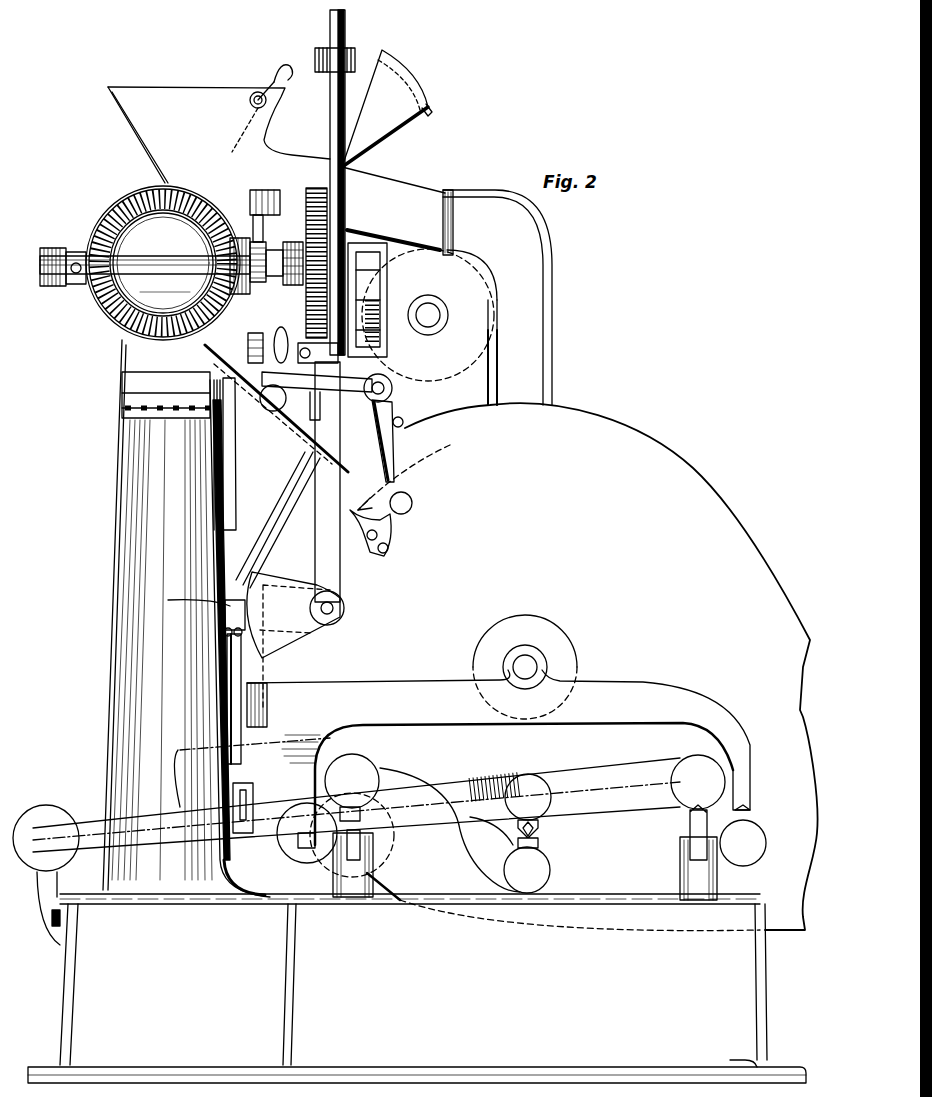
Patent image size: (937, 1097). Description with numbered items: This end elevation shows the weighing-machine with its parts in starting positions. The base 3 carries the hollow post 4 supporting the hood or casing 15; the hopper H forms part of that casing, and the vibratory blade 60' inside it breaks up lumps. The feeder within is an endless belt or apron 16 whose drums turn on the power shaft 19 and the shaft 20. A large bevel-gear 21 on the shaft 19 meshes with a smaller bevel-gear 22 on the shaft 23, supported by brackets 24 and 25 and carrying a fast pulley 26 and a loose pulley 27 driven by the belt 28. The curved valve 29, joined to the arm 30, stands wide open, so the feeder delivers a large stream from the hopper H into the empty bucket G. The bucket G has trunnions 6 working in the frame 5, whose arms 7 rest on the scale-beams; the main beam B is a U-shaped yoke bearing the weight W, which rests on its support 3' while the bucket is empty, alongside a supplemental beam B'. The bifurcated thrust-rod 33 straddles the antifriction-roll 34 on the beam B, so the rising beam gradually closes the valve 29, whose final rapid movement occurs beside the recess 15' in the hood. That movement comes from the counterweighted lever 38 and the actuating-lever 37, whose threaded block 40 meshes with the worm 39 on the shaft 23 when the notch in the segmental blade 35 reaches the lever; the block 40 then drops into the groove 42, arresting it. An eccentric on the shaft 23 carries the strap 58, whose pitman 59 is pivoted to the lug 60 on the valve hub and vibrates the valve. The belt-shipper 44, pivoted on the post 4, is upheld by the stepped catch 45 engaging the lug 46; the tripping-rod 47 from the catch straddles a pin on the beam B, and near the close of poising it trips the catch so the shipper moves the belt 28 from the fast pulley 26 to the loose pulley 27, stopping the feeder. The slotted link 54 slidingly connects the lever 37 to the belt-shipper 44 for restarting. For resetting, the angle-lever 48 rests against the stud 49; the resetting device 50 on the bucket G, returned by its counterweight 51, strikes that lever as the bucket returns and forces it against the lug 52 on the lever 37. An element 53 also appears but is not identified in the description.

The hopper or chute H is at (219, 135).
The disintegrating blade 60' is at (262, 98).
The endless driving belt 28 is at (345, 22).
The valve arm 30 is at (398, 90).
The loose pulley 27 is at (347, 160).
The stream-controlling valve 29 is at (432, 110).
The segmental blade 35 is at (357, 190).
The hood or casing 15 is at (457, 297).
The recess in hood 15' is at (469, 214).
The endless belt or apron 16 is at (475, 367).
The bracket 25 is at (422, 308).
The feeder drum shaft 20 is at (440, 315).
The large bevel-gear 21 is at (117, 204).
The main or power shaft 19 is at (150, 274).
The small bevel-gear 22 is at (202, 272).
The shaft 23 is at (130, 256).
The bracket 24 is at (60, 288).
The strap or split ring 58 is at (232, 250).
The pitman 59 is at (245, 206).
The fast pulley 26 is at (325, 250).
The lug or ear 60 is at (263, 197).
The oscillating block 40 is at (312, 198).
The worm 39 is at (388, 268).
The bar 53 is at (372, 240).
The actuating-lever 37 is at (272, 330).
The groove 42 is at (238, 300).
The counterweighted lever 38 is at (296, 422).
The lug 52 is at (264, 386).
The link 54 is at (318, 364).
The angle-lever 48 is at (392, 408).
The stud 49 is at (404, 423).
The counterweight 51 is at (412, 503).
The resetting device 50 is at (386, 530).
The belt-shipper 44 is at (340, 567).
The thrust-rod 33 is at (230, 492).
The lug 46 is at (250, 585).
The stepped catch 45 is at (226, 622).
The tripping-rod 47 is at (243, 680).
The hollow post 4 is at (120, 572).
The bucket G is at (611, 666).
The trunnions 6 is at (530, 664).
The bucket-frame 5 is at (498, 757).
The antifriction-roll 34 is at (272, 762).
The arms 7 is at (764, 772).
The main beam B is at (356, 805).
The supplemental beam B' is at (563, 849).
The weight W is at (54, 816).
The support 3' is at (36, 908).
The base 3 is at (417, 988).